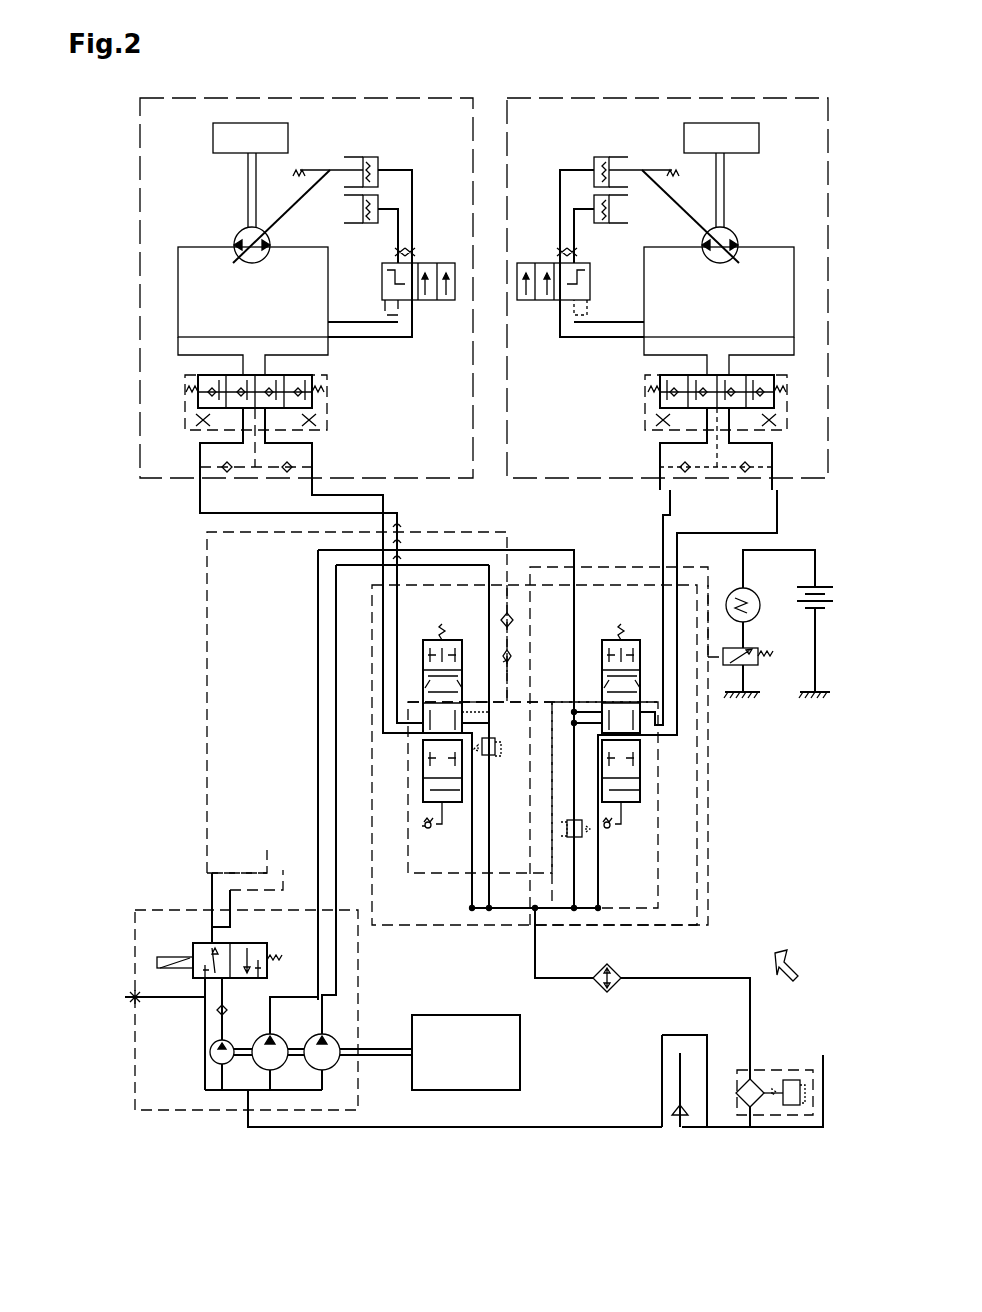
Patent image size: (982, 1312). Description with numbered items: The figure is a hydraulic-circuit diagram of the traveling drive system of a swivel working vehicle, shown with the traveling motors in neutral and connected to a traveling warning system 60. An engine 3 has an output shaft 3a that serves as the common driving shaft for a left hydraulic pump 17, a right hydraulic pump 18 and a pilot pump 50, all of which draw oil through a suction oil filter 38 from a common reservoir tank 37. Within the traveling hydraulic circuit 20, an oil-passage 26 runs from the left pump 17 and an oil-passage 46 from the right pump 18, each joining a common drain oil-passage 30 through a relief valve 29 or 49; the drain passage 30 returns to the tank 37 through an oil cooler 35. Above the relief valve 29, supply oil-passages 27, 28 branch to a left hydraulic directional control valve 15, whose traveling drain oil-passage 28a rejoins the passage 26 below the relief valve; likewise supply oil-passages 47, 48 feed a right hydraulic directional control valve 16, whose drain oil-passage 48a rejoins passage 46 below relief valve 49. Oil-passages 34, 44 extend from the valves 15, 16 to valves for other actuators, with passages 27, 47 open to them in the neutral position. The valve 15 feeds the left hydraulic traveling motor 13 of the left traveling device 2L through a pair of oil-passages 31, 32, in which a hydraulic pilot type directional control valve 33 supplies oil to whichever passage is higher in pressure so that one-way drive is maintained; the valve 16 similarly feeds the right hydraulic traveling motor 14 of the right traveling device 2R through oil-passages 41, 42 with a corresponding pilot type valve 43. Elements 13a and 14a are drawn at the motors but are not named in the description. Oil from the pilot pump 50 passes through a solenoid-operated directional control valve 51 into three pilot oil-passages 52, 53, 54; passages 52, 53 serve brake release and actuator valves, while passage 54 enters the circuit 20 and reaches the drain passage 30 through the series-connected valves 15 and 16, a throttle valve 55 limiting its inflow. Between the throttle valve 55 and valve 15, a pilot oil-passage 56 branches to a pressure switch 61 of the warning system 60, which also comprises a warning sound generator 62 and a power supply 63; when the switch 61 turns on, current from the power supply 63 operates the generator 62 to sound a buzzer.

The left traveling device 2L is at (137, 352).
The right traveling device 2R is at (830, 358).
The left hydraulic traveling motor 13 is at (258, 262).
The left motor output shaft 13a is at (247, 185).
The right hydraulic traveling motor 14 is at (712, 262).
The right motor output shaft 14a is at (725, 185).
The hydraulic pilot type directional control valve 33 is at (352, 393).
The hydraulic pilot type directional control valve 43 is at (633, 398).
The left hydraulic directional control valve 15 is at (448, 622).
The right hydraulic directional control valve 16 is at (607, 605).
The left hydraulic pump 17 is at (272, 1030).
The right hydraulic pump 18 is at (338, 1030).
The engine 3 is at (466, 1052).
The output shaft 3a is at (368, 1060).
The traveling hydraulic circuit 20 is at (816, 979).
The oil-passage 26 is at (318, 668).
The operating-oil supply oil-passage 27 is at (503, 702).
The operating-oil supply oil-passage 28 is at (497, 740).
The traveling drain oil-passage 28a is at (472, 892).
The relief valve 29 is at (492, 760).
The common drain oil-passage 30 is at (535, 940).
The oil-passage 31 is at (383, 648).
The oil-passage 32 is at (383, 610).
The oil-passage 34 is at (383, 708).
The oil cooler 35 is at (622, 970).
The reservoir tank 37 is at (823, 1058).
The suction oil filter 38 is at (678, 1110).
The oil-passage 41 is at (677, 550).
The oil-passage 42 is at (660, 592).
The oil-passage 44 is at (665, 715).
The oil-passage 46 is at (318, 720).
The operating-oil supply oil-passage 47 is at (575, 720).
The operating-oil supply oil-passage 48 is at (578, 760).
The traveling drain oil-passage 48a is at (610, 850).
The relief valve 49 is at (582, 838).
The pilot pump 50 is at (210, 1068).
The solenoid-operated directional control valve 51 is at (192, 917).
The pilot oil-passage 52 is at (235, 860).
The pilot oil-passage 53 is at (283, 868).
The pilot oil-passage 54 is at (207, 612).
The throttle valve 55 is at (512, 655).
The pilot oil-passage for a pressure switch 56 is at (595, 567).
The traveling warning system 60 is at (810, 756).
The pressure switch 61 is at (752, 668).
The warning sound generator 62 is at (758, 590).
The power supply 63 is at (815, 587).